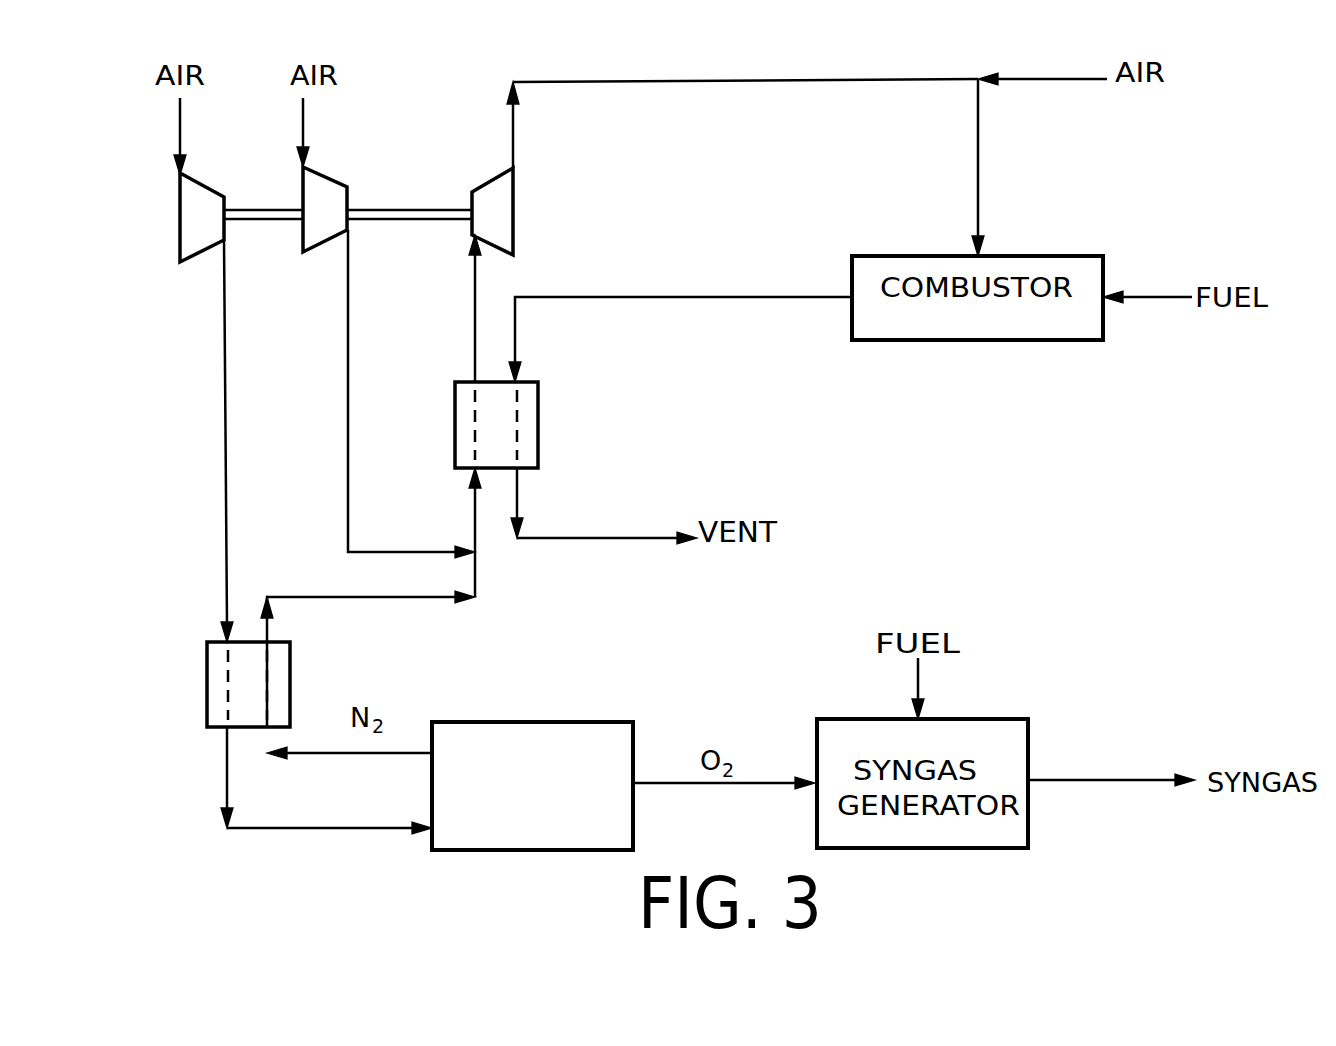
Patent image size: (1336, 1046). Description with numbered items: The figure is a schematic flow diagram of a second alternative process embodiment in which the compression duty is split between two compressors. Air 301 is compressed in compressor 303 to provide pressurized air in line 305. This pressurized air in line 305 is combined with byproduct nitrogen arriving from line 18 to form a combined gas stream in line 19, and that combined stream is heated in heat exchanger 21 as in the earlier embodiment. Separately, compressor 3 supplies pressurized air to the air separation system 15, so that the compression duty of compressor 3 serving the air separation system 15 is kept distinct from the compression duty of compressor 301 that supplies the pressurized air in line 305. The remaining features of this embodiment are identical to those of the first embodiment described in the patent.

The compressor 3 is at (180, 201).
The air 301 is at (303, 128).
The compressor 303 is at (347, 230).
The line 305 is at (348, 365).
The heat exchanger 21 is at (538, 430).
The line 19 is at (475, 508).
The line 18 is at (393, 598).
The air separation system 15 is at (587, 722).